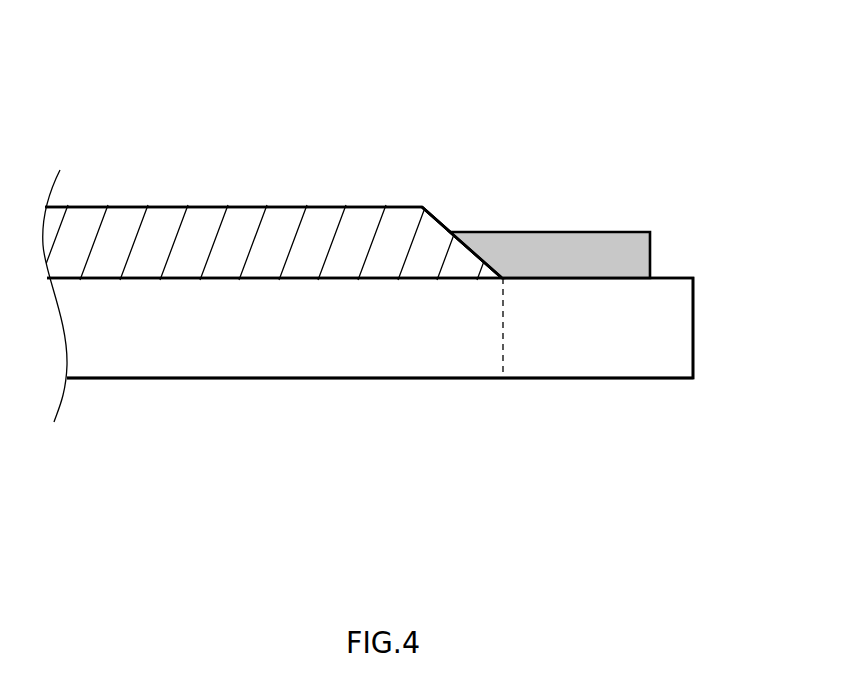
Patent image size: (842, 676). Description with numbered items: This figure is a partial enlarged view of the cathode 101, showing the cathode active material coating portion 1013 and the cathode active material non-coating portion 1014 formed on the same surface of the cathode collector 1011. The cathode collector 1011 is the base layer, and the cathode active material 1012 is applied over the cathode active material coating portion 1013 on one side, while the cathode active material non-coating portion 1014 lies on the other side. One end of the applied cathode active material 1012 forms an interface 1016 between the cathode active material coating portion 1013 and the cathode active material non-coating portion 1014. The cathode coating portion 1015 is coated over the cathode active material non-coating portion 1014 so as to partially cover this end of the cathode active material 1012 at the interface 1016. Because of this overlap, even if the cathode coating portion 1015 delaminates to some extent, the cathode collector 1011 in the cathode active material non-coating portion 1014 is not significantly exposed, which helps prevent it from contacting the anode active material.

The cathode 101 is at (554, 83).
The cathode collector 1011 is at (680, 327).
The cathode active material 1012 is at (240, 218).
The cathode active material coating portion 1013 is at (260, 410).
The cathode active material non-coating portion 1014 is at (550, 408).
The cathode coating portion 1015 is at (572, 245).
The interface 1016 is at (444, 225).